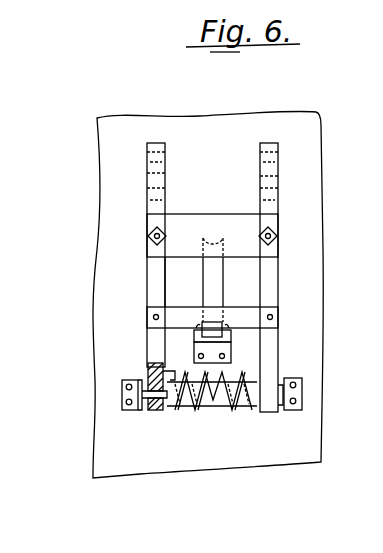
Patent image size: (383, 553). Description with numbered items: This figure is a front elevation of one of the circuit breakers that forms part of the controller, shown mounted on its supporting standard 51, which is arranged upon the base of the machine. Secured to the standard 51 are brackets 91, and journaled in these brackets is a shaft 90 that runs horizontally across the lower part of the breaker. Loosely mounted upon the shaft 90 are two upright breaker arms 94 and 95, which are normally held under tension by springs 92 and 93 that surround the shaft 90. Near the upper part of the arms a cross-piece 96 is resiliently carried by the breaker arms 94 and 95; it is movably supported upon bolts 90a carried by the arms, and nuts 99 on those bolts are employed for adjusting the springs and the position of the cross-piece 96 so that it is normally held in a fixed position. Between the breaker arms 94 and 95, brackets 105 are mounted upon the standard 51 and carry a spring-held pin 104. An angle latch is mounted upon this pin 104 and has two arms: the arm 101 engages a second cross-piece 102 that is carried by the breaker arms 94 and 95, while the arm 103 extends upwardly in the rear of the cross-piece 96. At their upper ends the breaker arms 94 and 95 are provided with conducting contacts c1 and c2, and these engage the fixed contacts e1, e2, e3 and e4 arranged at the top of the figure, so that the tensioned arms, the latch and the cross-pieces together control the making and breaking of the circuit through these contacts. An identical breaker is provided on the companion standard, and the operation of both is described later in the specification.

The standard 51 is at (124, 460).
The shaft 90 is at (156, 412).
The bolt 90a is at (150, 238).
The bracket 91 is at (128, 412).
The spring 92 is at (196, 410).
The spring 93 is at (235, 410).
The breaker arm 94 is at (153, 342).
The breaker arm 95 is at (272, 348).
The cross-piece 96 is at (215, 222).
The nut 99 is at (153, 229).
The latch arm 101 is at (196, 334).
The cross-piece 102 is at (236, 312).
The latch arm 103 is at (213, 272).
The spring-held pin 104 is at (279, 327).
The bracket 105 is at (232, 352).
The contact e1 is at (166, 151).
The contact e2 is at (166, 193).
The contact e3 is at (279, 152).
The contact e4 is at (279, 196).
The conducting contact c1 is at (279, 175).
The conducting contact c2 is at (166, 172).